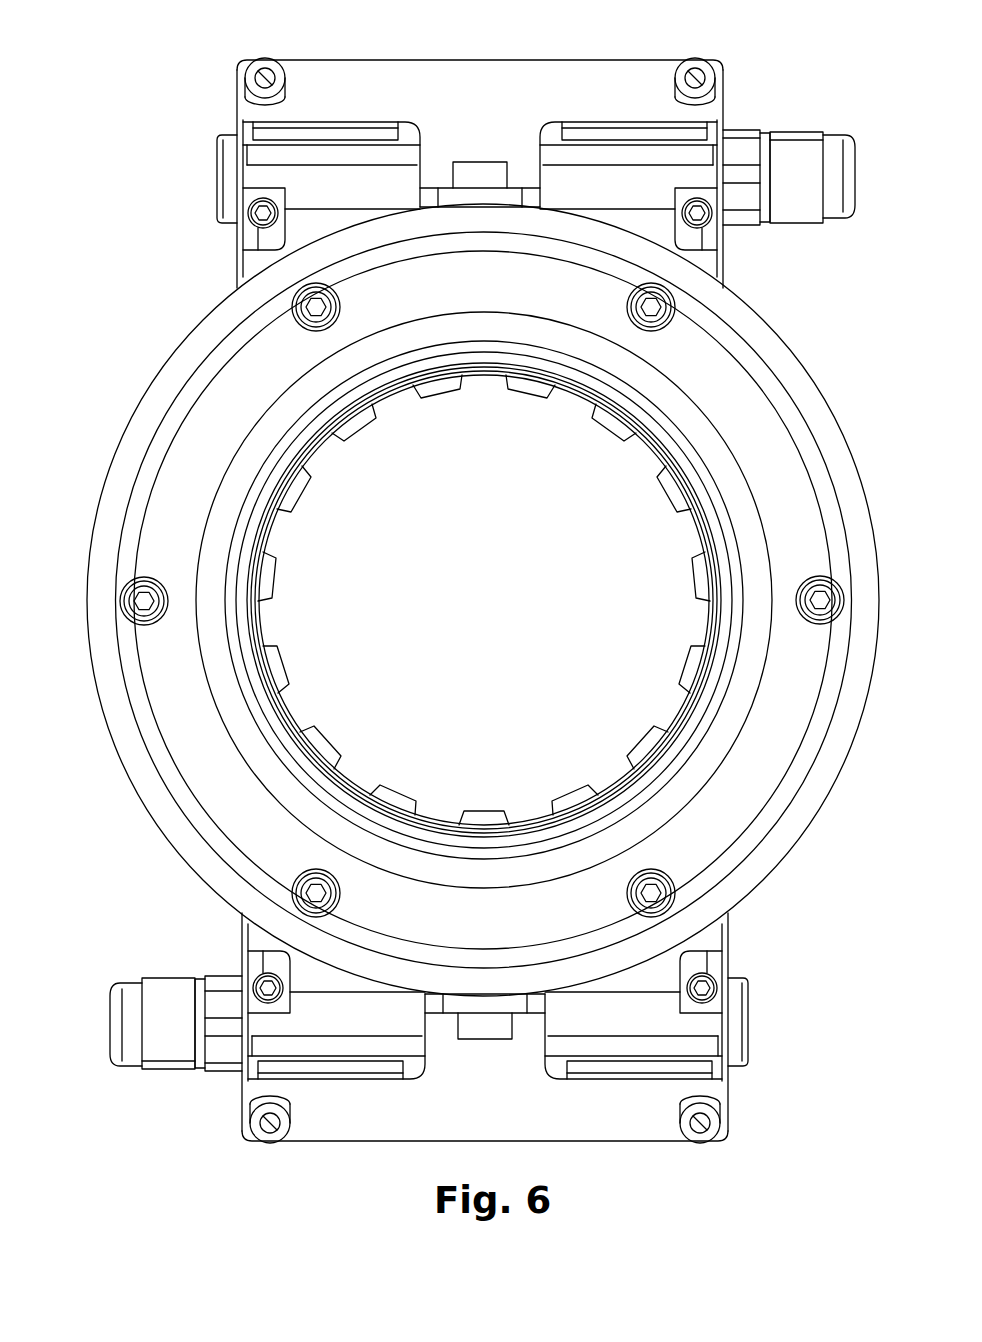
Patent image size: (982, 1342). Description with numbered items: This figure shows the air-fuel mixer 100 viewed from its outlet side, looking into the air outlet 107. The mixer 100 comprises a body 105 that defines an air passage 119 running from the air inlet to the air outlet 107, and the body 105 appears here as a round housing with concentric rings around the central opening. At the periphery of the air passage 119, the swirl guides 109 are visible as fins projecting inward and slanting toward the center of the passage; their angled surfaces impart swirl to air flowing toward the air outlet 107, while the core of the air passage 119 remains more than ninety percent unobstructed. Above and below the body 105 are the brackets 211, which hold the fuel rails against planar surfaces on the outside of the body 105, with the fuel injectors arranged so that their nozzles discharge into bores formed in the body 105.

The air-fuel mixer 100 is at (464, 576).
The body 105 is at (753, 400).
The air outlet 107 is at (218, 529).
The swirl guides 109 is at (692, 576).
The air passage 119 is at (500, 617).
The brackets 211 is at (468, 92).